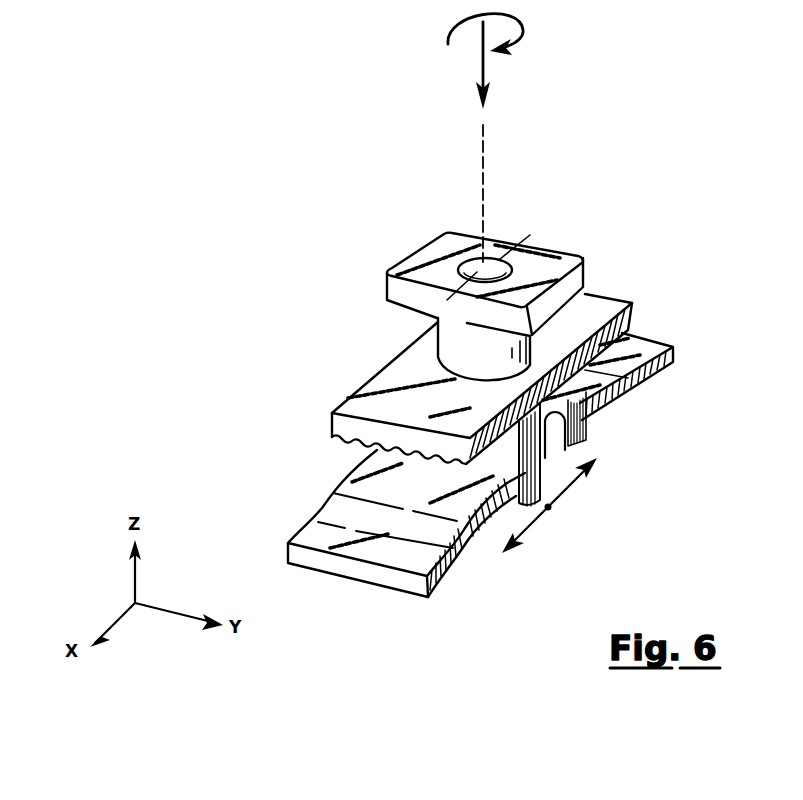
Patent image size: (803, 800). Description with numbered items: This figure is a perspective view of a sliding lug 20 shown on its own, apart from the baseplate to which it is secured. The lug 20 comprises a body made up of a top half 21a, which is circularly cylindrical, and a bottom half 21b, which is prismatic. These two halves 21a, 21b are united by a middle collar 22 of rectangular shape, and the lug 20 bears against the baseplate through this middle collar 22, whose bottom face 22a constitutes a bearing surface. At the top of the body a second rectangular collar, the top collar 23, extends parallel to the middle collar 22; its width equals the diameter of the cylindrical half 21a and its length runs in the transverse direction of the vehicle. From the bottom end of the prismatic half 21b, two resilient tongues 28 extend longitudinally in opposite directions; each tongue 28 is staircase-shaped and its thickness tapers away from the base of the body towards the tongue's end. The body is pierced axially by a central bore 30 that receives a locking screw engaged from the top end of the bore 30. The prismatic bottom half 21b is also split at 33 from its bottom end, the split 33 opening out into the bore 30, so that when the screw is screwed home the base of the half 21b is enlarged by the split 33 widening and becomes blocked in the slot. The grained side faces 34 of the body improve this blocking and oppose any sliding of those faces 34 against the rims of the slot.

The sliding lug 20 is at (291, 332).
The top half of the body 21a is at (466, 378).
The bottom half of the body 21b is at (548, 433).
The middle collar 22 is at (387, 383).
The bottom face of the middle collar 22a is at (332, 438).
The top collar 23 is at (437, 250).
The resilient tongues 28 is at (470, 546).
The central bore 30 is at (498, 262).
The split 33 is at (548, 507).
The grained side faces 34 is at (612, 373).